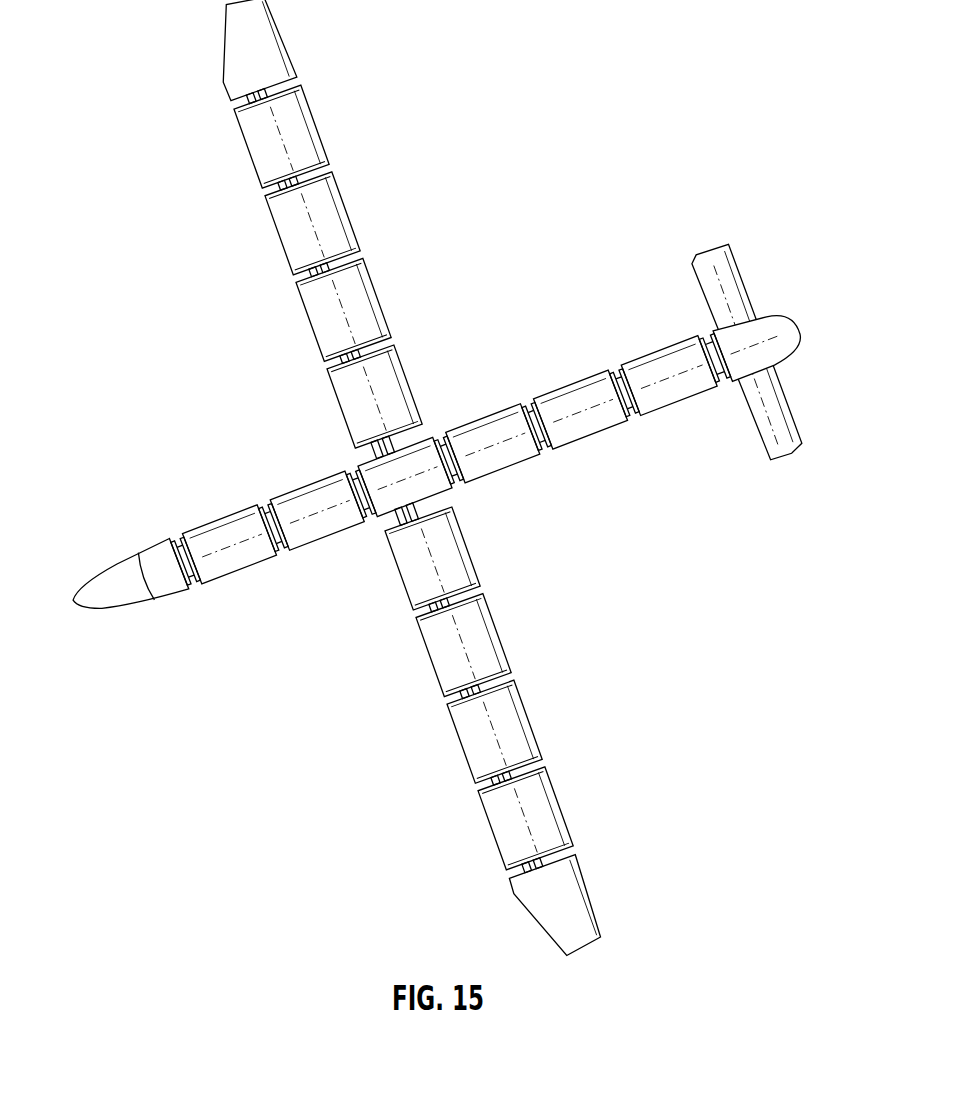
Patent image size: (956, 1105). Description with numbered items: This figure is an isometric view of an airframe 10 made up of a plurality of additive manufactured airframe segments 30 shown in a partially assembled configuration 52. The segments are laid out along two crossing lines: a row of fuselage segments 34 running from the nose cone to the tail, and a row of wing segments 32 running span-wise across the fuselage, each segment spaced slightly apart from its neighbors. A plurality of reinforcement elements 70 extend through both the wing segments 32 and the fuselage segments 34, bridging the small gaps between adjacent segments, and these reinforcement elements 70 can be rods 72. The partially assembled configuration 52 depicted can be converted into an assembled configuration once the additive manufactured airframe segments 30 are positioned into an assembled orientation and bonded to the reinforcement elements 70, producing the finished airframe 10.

The airframe 10 is at (124, 160).
The additive manufactured airframe segments 30 is at (389, 296).
The wing segments 32 is at (310, 130).
The fuselage segments 34 is at (247, 551).
The partially assembled configuration 52 is at (563, 210).
The reinforcement elements 70 is at (370, 451).
The rods 72 is at (372, 455).